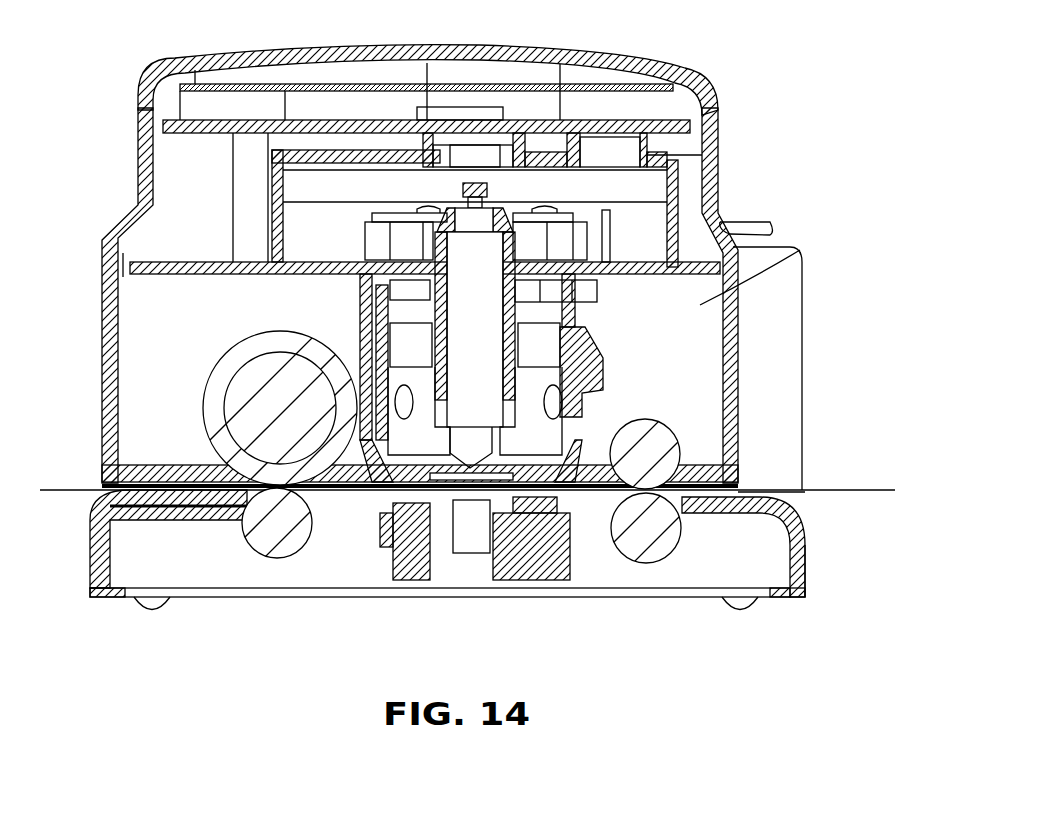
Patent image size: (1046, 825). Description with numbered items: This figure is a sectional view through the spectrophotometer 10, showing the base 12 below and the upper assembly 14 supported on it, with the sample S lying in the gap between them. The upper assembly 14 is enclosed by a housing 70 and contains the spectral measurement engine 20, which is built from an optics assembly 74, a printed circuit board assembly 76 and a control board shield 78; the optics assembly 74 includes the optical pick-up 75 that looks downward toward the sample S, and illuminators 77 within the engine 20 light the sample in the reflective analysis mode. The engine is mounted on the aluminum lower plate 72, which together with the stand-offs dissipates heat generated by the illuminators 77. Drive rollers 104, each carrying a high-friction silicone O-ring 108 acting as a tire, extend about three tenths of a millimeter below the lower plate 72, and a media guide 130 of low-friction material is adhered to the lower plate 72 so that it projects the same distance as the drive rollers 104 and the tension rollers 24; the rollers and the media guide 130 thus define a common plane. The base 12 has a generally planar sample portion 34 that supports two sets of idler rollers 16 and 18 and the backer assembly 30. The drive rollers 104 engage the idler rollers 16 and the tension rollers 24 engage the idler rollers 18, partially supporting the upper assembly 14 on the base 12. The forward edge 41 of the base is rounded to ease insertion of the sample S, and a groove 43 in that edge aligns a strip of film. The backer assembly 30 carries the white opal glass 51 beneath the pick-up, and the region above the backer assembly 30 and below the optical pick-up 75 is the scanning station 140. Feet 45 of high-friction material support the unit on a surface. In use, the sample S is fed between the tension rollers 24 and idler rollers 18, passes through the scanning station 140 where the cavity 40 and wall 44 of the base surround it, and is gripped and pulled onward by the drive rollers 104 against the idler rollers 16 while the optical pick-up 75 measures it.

The spectrophotometer 10 is at (467, 331).
The base 12 is at (489, 566).
The upper assembly 14 is at (472, 242).
The idler rollers 16 is at (263, 540).
The idler rollers 18 is at (628, 548).
The spectral measurement engine 20 is at (660, 321).
The tension rollers 24 is at (647, 430).
The backer assembly 30 is at (388, 555).
The sample portion 34 is at (533, 500).
The cavity 40 is at (187, 523).
The forward edge 41 is at (792, 503).
The groove 43 is at (803, 527).
The hatched wall 44 is at (700, 512).
The foot 45 is at (148, 603).
The white opal glass 51 is at (480, 503).
The housing 70 is at (510, 53).
The lower plate 72 is at (167, 467).
The optics assembly 74 is at (197, 267).
The optical pick-up 75 is at (490, 369).
The printed circuit board assembly 76 is at (187, 130).
The illuminators 77 is at (390, 398).
The control board shield 78 is at (267, 84).
The drive rollers 104 is at (238, 388).
The O-ring 108 is at (277, 422).
The media guide 130 is at (582, 467).
The scanning station 140 is at (430, 555).
The sample S is at (838, 490).